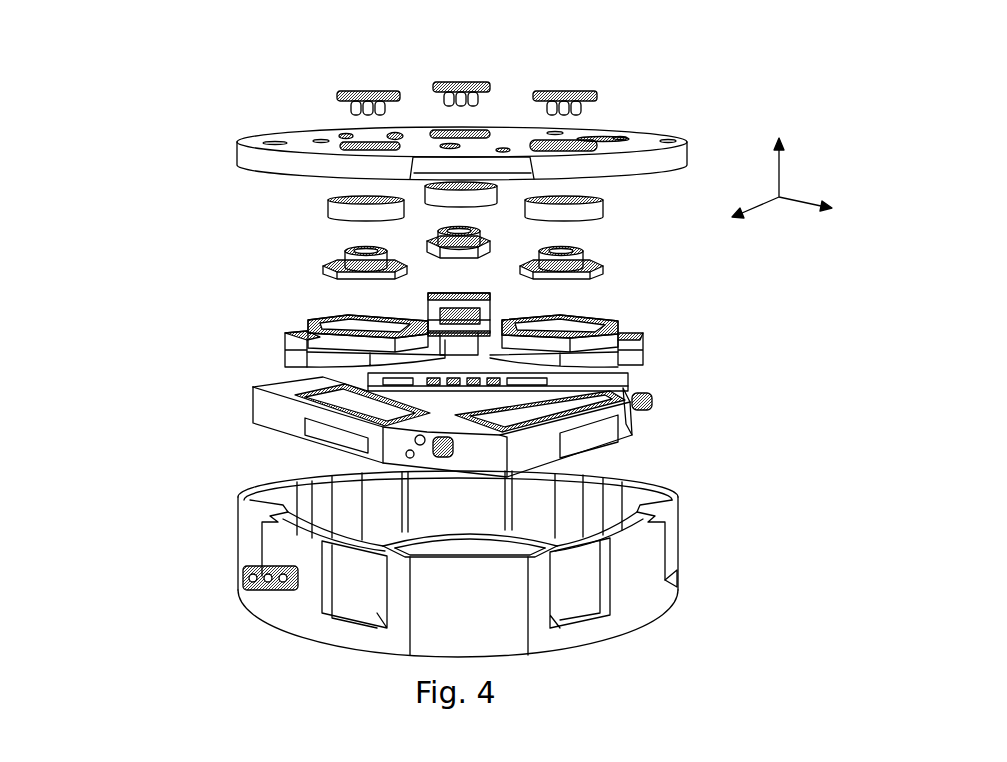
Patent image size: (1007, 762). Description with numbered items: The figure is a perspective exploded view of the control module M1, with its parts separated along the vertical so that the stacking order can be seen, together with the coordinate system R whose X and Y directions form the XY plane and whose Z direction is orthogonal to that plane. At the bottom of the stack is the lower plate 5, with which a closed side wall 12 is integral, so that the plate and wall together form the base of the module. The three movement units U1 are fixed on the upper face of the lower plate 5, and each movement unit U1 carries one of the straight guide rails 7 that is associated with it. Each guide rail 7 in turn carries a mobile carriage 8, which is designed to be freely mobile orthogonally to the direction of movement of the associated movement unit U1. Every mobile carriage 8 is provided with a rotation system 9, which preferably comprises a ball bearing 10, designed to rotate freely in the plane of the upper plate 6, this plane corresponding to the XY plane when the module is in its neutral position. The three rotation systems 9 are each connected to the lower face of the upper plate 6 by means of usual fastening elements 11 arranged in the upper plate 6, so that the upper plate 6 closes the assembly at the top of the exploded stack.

The lower plate 5 is at (583, 630).
The upper plate 6 is at (692, 152).
The straight guide rail 7 is at (428, 318).
The mobile carriage 8 is at (587, 305).
The rotation system 9 is at (262, 119).
The ball bearing 10 is at (328, 210).
The fastening element 11 is at (453, 84).
The closed side wall 12 is at (641, 589).
The movement unit U1 is at (219, 399).
The control module M1 is at (152, 545).
The coordinate system R is at (817, 152).